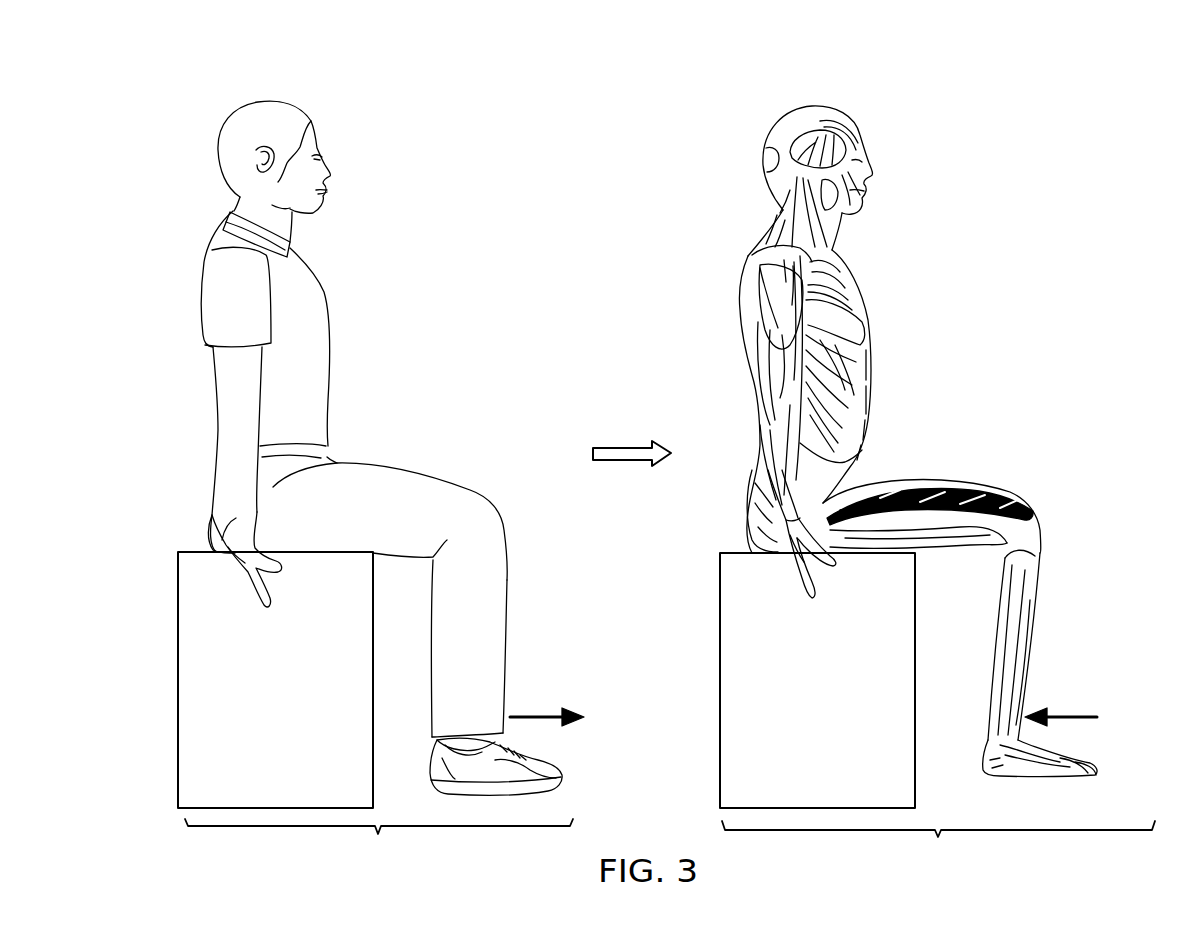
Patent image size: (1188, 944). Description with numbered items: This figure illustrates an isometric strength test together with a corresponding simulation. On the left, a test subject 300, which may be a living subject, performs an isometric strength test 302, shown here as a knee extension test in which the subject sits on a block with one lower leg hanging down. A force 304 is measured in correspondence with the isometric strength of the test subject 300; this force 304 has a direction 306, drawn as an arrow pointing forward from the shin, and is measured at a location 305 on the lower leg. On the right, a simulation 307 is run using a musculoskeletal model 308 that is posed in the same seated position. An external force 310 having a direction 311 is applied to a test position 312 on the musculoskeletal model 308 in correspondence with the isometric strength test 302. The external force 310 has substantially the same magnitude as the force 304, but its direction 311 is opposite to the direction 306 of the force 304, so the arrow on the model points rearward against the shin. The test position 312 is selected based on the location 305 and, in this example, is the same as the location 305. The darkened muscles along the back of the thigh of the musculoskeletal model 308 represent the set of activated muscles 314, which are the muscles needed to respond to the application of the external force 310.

The test subject 300 is at (240, 101).
The isometric strength test 302 is at (375, 709).
The force 304 is at (537, 713).
The location 305 is at (513, 690).
The direction 306 is at (586, 706).
The simulation 307 is at (937, 712).
The musculoskeletal model 308 is at (781, 101).
The external force 310 is at (1072, 713).
The direction 311 is at (1109, 702).
The test position 312 is at (1005, 700).
The set of activated muscles 314 is at (977, 490).